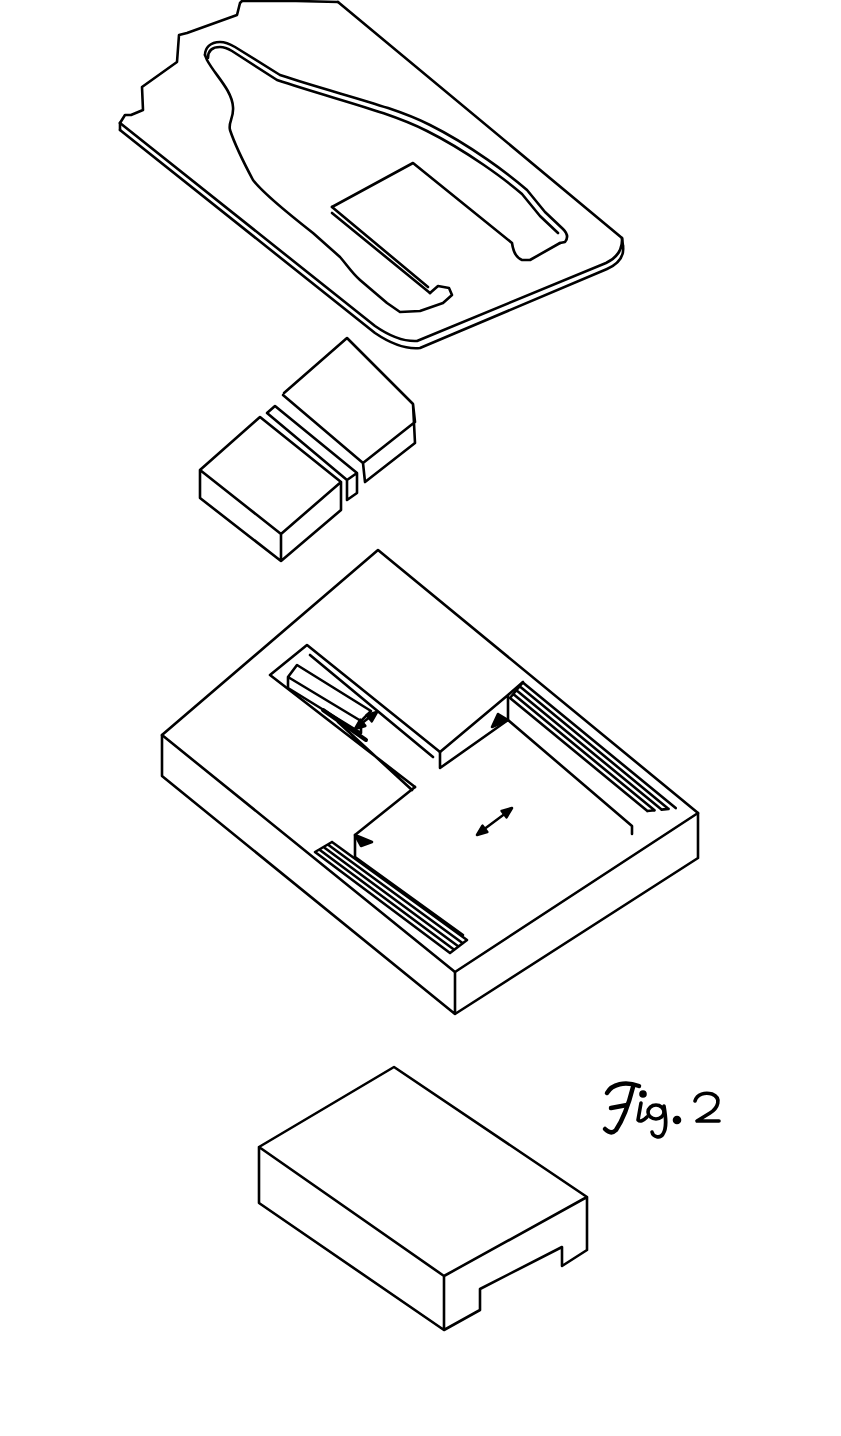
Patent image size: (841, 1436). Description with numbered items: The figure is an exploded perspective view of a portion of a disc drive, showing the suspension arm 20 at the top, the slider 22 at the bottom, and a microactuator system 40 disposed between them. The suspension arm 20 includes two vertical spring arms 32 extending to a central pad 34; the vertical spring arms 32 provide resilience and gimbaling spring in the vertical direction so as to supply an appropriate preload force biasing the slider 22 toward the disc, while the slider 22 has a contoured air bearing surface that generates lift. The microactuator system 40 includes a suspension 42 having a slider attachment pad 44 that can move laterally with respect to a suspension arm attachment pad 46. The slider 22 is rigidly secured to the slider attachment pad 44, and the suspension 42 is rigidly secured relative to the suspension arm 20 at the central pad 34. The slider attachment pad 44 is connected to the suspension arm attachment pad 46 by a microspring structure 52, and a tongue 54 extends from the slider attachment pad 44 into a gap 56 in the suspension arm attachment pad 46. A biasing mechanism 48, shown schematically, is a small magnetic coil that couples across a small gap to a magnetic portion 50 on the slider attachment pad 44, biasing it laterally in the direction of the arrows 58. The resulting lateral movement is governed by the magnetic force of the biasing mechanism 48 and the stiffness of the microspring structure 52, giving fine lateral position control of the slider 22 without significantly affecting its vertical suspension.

The suspension arm 20 is at (351, 174).
The slider 22 is at (352, 1243).
The vertical spring arms 32 is at (296, 248).
The central pad 34 is at (447, 205).
The microactuator system 40 is at (376, 676).
The suspension 42 is at (384, 782).
The slider attachment pad 44 is at (553, 864).
The suspension arm attachment pad 46 is at (420, 612).
The biasing mechanism 48 is at (303, 449).
The magnetic portion 50 is at (340, 458).
The microspring structure 52 is at (608, 724).
The tongue 54 is at (293, 672).
The gap 56 is at (300, 706).
The arrows 58 is at (380, 727).